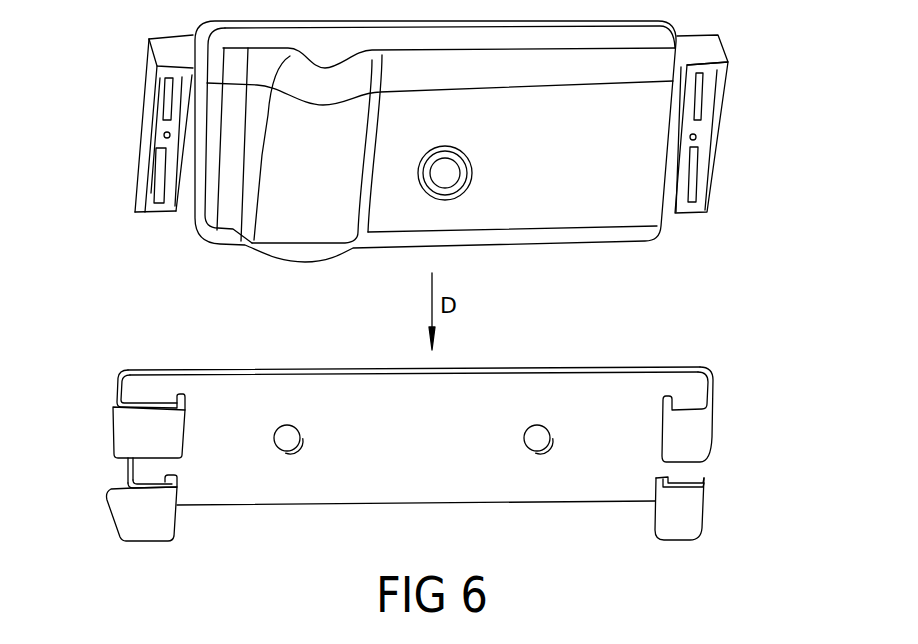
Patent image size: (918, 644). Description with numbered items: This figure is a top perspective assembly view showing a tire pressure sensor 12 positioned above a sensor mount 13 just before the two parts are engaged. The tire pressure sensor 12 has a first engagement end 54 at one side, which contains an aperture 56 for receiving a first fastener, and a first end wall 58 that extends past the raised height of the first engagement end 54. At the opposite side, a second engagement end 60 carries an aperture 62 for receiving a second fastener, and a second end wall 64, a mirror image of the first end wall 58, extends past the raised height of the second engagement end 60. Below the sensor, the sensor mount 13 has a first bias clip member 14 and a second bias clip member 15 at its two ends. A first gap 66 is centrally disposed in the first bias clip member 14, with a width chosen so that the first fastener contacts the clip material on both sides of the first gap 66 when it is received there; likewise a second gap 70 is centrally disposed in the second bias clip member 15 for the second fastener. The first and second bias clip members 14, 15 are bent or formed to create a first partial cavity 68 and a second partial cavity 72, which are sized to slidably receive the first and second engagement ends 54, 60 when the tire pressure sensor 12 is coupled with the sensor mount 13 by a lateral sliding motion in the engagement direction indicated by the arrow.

The tire pressure sensor 12 is at (400, 222).
The sensor mount 13 is at (340, 485).
The first bias clip member 14 is at (143, 522).
The second bias clip member 15 is at (668, 530).
The first engagement end 54 is at (157, 150).
The aperture 56 is at (163, 136).
The first end wall 58 is at (133, 123).
The second engagement end 60 is at (700, 158).
The aperture 62 is at (700, 136).
The second end wall 64 is at (729, 113).
The first gap 66 is at (143, 474).
The first partial cavity 68 is at (152, 393).
The second gap 70 is at (688, 472).
The second partial cavity 72 is at (687, 400).